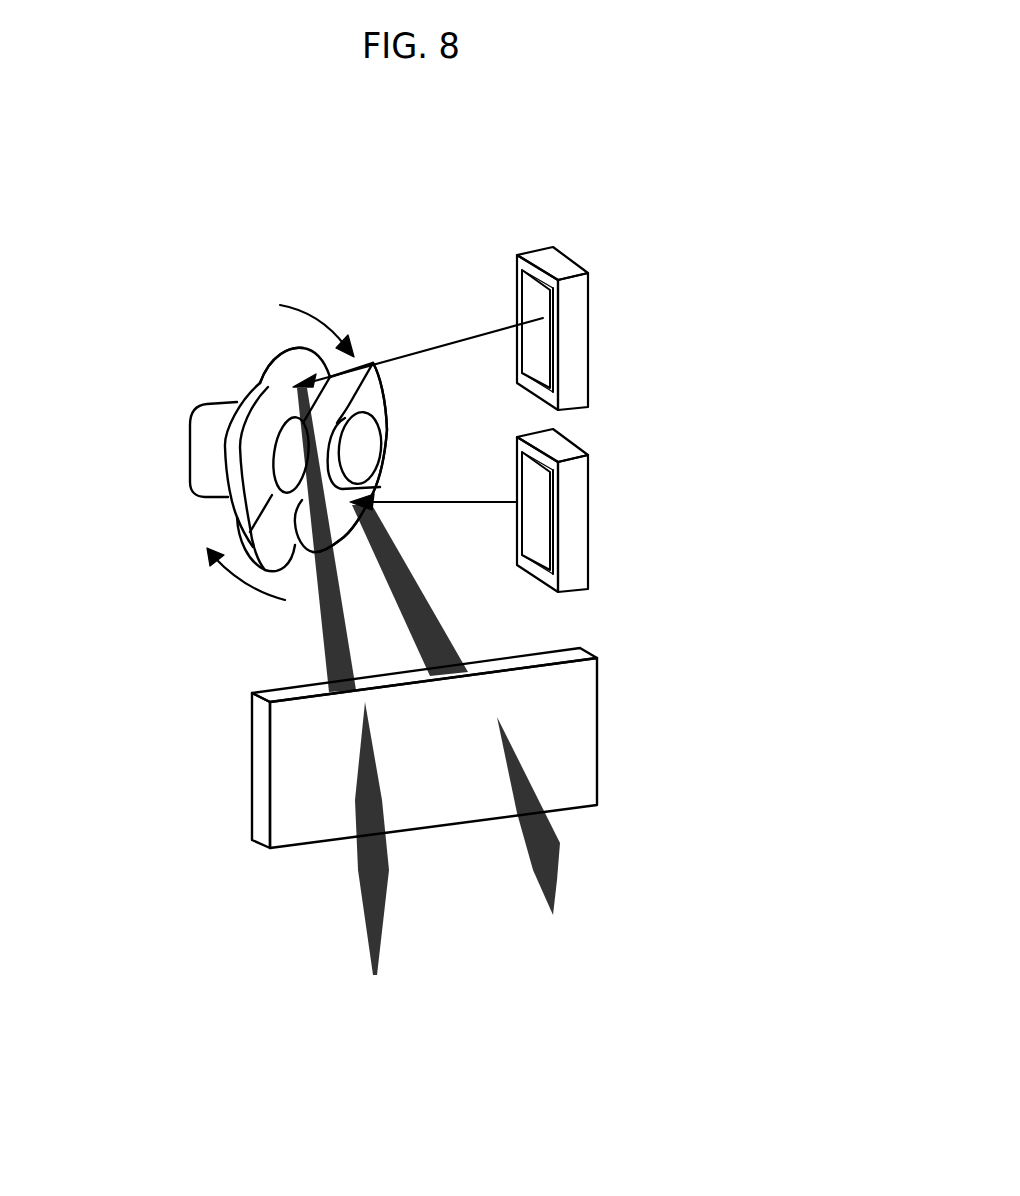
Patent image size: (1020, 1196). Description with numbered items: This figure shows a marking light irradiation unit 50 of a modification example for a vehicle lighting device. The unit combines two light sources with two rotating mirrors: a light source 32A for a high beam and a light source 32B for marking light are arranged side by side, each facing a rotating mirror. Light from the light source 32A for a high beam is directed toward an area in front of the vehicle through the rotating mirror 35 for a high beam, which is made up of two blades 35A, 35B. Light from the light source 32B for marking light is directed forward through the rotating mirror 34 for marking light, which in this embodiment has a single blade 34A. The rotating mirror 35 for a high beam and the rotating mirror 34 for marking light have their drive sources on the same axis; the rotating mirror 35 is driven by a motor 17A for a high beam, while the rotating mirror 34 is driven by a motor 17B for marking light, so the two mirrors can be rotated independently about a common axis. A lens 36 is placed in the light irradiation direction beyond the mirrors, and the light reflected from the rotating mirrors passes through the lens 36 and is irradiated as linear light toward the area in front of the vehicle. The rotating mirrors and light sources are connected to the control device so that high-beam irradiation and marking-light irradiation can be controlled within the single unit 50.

The marking light irradiation unit 50 is at (493, 368).
The light source for a high beam 32A is at (576, 322).
The light source for marking light 32B is at (576, 502).
The rotating mirror for a high beam 35 is at (270, 338).
The blade 35A is at (257, 381).
The blade 35B is at (283, 564).
The rotating mirror for marking light 34 is at (392, 519).
The blade 34A is at (352, 547).
The motor for a high beam 17A is at (208, 428).
The motor for marking light 17B is at (376, 426).
The lens 36 is at (604, 743).